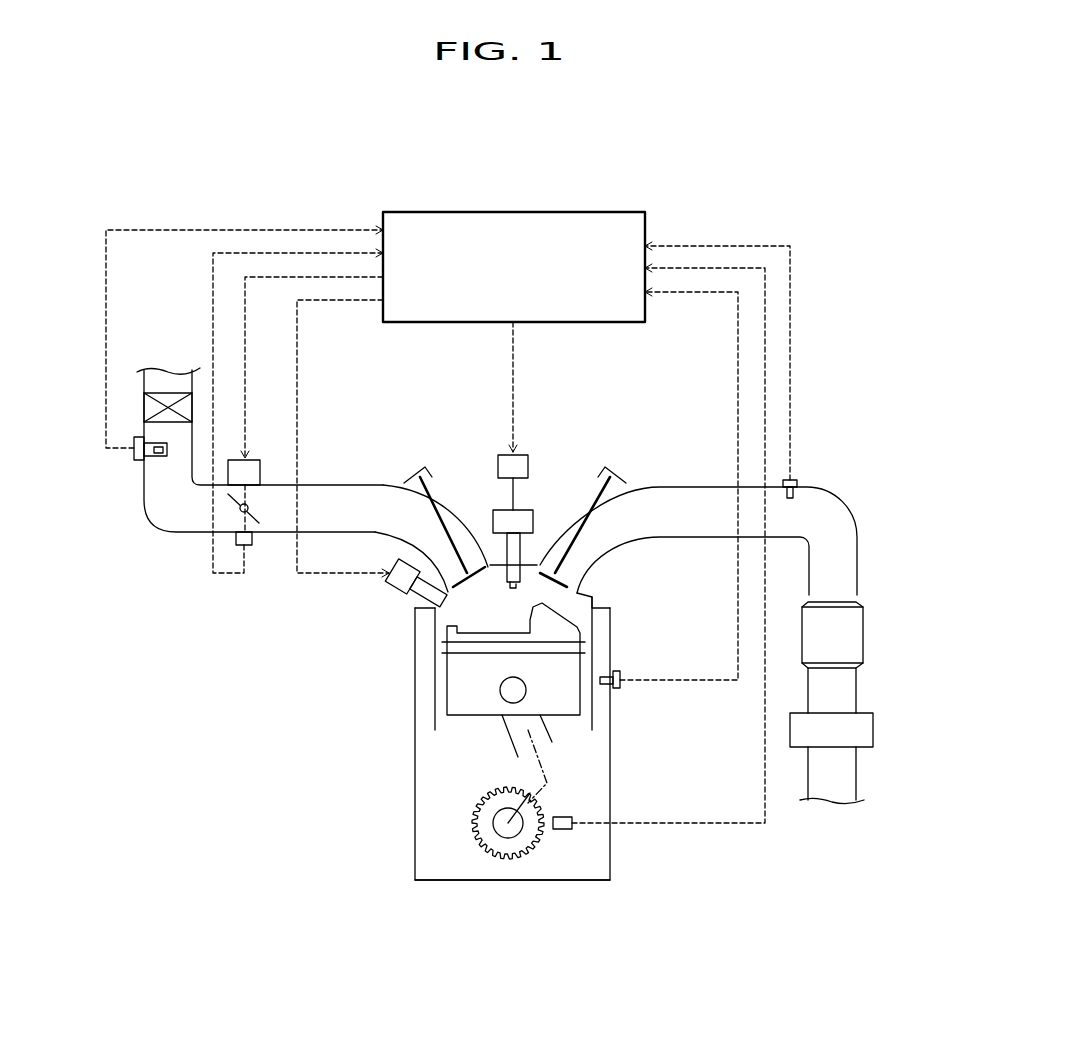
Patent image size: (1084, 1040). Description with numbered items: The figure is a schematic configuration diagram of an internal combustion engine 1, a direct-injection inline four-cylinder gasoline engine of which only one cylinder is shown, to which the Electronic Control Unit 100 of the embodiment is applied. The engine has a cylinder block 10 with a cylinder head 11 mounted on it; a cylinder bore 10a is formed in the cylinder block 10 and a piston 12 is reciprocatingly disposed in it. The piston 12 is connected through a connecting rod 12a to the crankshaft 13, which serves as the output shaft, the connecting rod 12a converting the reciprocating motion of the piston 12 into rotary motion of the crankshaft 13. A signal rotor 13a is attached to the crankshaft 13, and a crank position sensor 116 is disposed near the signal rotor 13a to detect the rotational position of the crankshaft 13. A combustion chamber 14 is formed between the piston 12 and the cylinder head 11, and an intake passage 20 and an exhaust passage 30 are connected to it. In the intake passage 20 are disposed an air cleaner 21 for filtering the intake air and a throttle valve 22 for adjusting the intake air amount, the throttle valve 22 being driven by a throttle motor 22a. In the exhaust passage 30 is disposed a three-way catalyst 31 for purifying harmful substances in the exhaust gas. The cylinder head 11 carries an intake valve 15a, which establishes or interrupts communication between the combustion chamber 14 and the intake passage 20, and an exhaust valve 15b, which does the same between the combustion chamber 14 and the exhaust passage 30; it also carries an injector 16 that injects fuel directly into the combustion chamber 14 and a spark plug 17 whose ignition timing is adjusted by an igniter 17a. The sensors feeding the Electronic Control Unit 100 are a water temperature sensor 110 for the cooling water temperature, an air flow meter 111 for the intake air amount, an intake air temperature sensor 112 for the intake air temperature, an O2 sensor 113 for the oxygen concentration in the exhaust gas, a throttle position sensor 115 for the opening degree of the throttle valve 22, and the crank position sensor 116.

The internal combustion engine 1 is at (408, 700).
The cylinder block 10 is at (612, 708).
The cylinder bore 10a is at (440, 672).
The cylinder head 11 is at (523, 563).
The piston 12 is at (473, 705).
The connecting rod 12a is at (538, 730).
The crankshaft 13 is at (500, 822).
The signal rotor 13a is at (487, 800).
The combustion chamber 14 is at (480, 627).
The intake valve 15a is at (440, 525).
The exhaust valve 15b is at (598, 553).
The injector 16 is at (390, 600).
The spark plug 17 is at (527, 503).
The igniter 17a is at (497, 478).
The intake passage 20 is at (350, 530).
The air cleaner 21 is at (171, 398).
The throttle valve 22 is at (238, 512).
The throttle motor 22a is at (252, 455).
The exhaust passage 30 is at (628, 531).
The three-way catalyst 31 is at (865, 635).
The Electronic Control Unit 100 is at (592, 212).
The water temperature sensor 110 is at (620, 670).
The air flow meter 111 is at (138, 468).
The intake air temperature sensor 112 is at (159, 455).
The O2 sensor 113 is at (797, 483).
The throttle position sensor 115 is at (252, 545).
The crank position sensor 116 is at (575, 815).